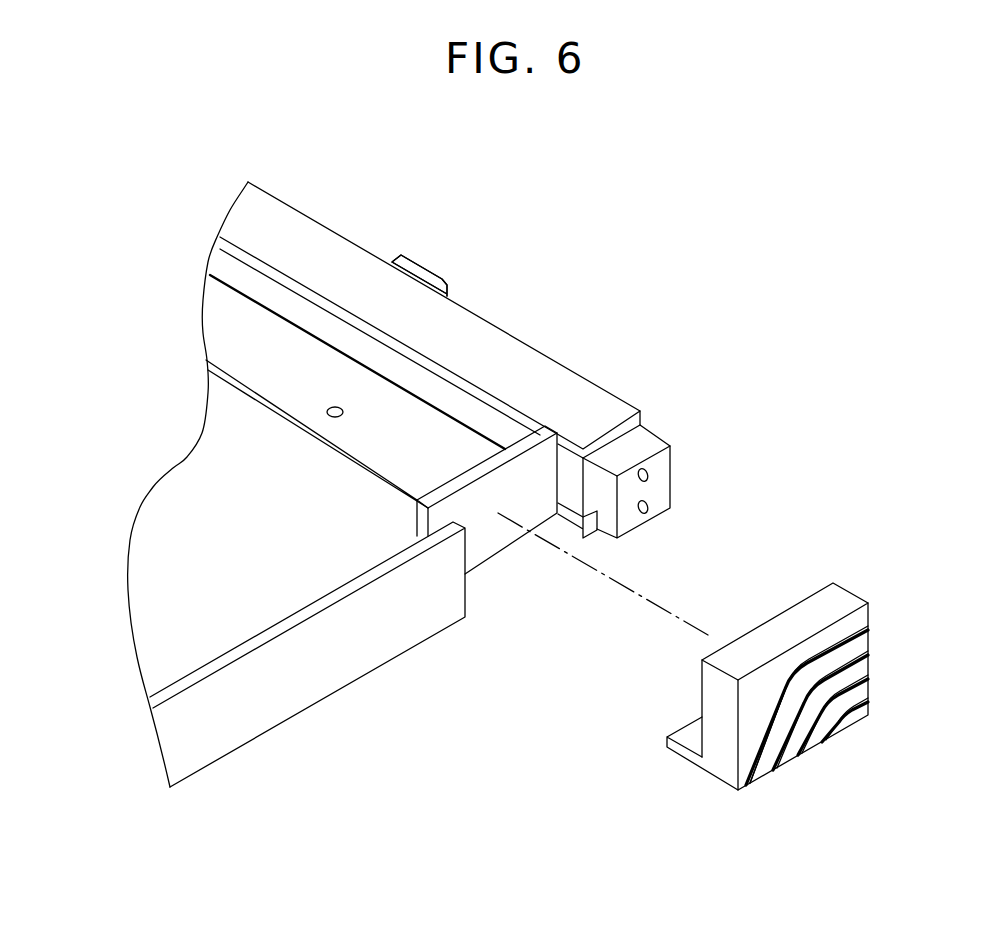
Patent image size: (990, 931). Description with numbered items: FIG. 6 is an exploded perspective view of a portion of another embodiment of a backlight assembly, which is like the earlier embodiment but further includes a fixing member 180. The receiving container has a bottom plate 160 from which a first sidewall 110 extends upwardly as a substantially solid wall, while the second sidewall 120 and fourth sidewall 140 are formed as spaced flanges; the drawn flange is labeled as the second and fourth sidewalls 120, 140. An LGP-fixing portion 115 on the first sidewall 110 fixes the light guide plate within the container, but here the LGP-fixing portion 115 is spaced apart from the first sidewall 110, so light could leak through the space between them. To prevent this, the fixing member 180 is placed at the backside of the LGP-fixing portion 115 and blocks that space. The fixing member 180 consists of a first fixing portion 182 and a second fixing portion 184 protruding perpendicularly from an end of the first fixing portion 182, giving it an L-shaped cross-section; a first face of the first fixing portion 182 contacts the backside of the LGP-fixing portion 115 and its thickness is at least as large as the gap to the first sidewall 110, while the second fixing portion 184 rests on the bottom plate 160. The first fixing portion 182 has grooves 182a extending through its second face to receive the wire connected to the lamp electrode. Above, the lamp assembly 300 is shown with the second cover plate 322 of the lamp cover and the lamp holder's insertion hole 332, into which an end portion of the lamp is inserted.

The first sidewall 110 is at (330, 678).
The LGP-fixing portion 115 is at (480, 552).
The second sidewall 120 is at (420, 273).
The fourth sidewall 140 is at (420, 273).
The bottom plate 160 is at (203, 498).
The fixing member 180 is at (863, 743).
The first fixing portion 182 is at (853, 618).
The grooves 182a is at (760, 767).
The second fixing portion 184 is at (710, 763).
The lamp assembly 300 is at (362, 223).
The second cover plate 322 is at (593, 398).
The insertion hole 332 is at (648, 471).